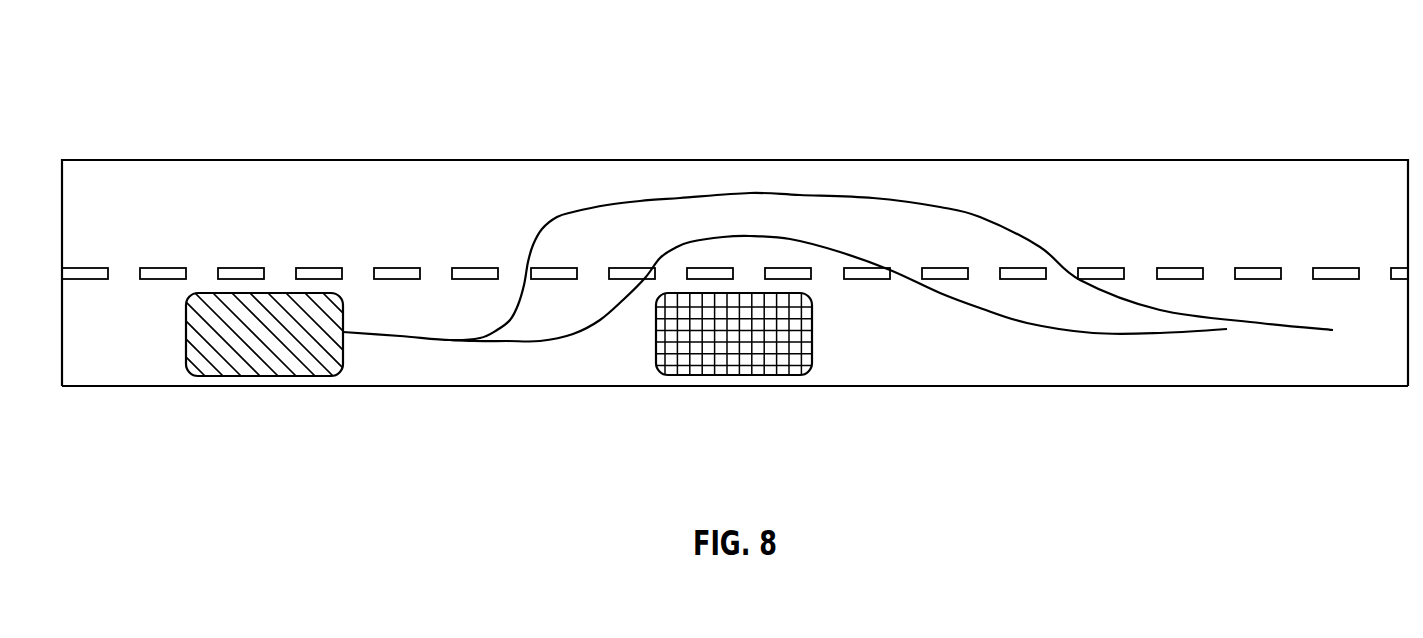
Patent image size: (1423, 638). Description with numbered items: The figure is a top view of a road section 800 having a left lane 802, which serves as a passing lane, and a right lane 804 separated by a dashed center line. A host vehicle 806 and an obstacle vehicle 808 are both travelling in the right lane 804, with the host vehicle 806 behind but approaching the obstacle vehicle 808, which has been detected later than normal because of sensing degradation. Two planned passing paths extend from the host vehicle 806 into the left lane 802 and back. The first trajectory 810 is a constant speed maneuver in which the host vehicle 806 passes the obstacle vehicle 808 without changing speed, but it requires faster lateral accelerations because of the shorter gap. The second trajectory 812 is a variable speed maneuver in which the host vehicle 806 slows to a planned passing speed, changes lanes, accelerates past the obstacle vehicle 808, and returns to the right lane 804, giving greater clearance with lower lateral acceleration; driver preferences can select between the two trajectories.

The road section 800 is at (121, 62).
The left lane 802 is at (1213, 190).
The right lane 804 is at (1112, 370).
The host vehicle 806 is at (274, 293).
The obstacle vehicle 808 is at (708, 375).
The first trajectory 810 is at (533, 342).
The second trajectory 812 is at (760, 195).